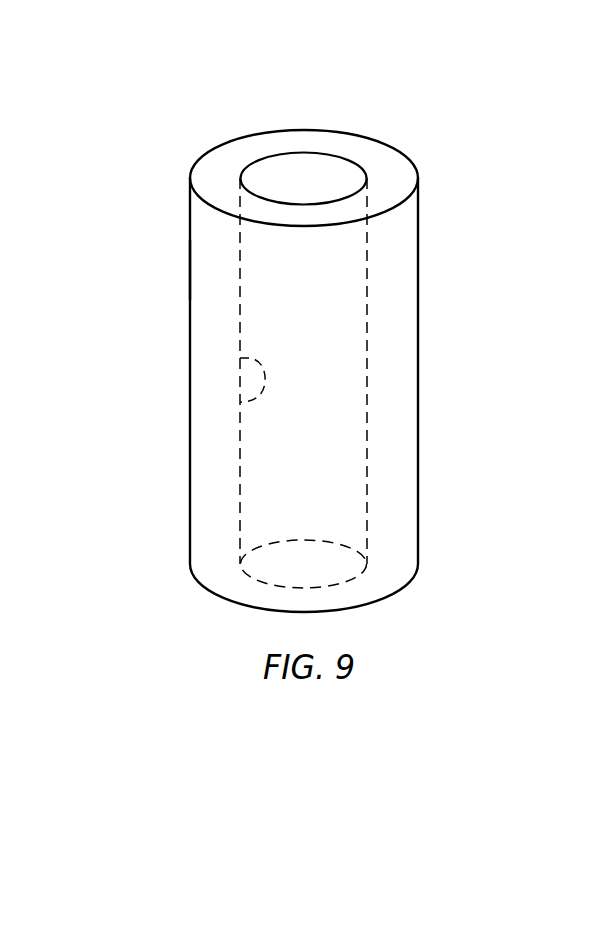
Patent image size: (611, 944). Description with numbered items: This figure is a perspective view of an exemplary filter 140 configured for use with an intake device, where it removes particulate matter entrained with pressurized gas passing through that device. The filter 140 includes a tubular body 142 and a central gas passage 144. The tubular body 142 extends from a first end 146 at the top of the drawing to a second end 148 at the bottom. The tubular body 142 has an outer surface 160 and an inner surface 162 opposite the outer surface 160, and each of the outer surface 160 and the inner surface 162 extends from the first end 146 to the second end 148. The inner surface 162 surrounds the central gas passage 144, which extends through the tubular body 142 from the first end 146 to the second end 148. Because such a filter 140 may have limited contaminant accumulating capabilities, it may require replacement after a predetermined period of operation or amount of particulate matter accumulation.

The filter 140 is at (443, 115).
The tubular body 142 is at (395, 248).
The central gas passage 144 is at (327, 190).
The first end 146 is at (218, 158).
The second end 148 is at (215, 596).
The outer surface 160 is at (190, 261).
The inner surface 162 is at (240, 402).